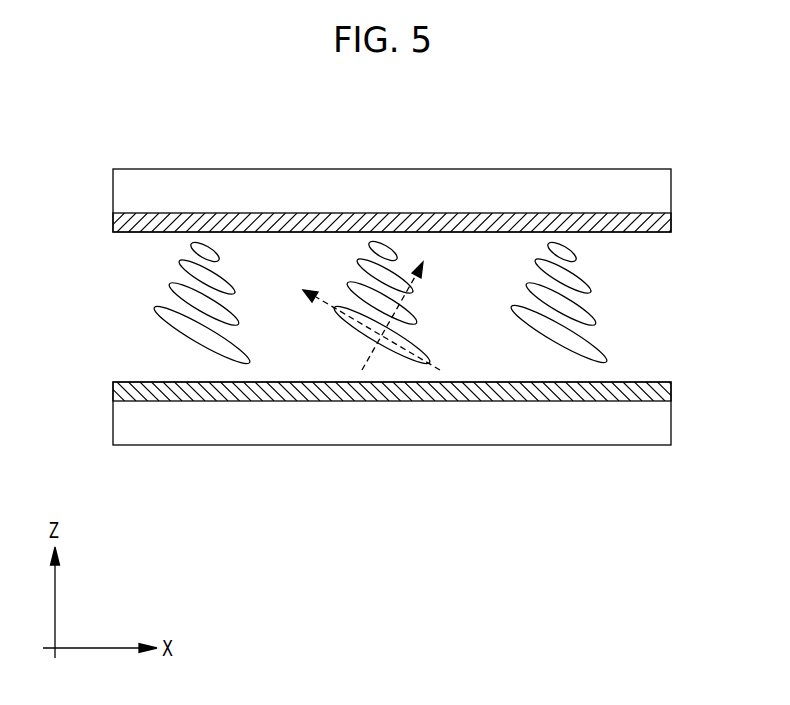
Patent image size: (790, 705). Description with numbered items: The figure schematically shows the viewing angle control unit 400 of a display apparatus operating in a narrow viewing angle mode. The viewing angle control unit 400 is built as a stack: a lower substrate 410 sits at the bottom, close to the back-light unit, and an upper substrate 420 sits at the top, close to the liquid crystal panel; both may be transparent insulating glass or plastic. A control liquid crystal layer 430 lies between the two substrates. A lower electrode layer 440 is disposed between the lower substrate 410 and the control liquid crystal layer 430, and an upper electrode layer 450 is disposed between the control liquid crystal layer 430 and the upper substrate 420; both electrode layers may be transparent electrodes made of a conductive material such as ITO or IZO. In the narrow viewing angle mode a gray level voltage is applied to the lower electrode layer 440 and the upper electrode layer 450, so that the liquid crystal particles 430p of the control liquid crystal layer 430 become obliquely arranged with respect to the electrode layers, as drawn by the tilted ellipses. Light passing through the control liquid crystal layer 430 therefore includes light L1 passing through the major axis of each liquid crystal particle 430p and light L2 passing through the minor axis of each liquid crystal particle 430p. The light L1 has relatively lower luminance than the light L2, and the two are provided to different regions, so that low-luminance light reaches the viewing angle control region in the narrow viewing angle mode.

The viewing angle control unit 400 is at (400, 112).
The lower substrate 410 is at (662, 422).
The upper substrate 420 is at (662, 193).
The control liquid crystal layer 430 is at (385, 308).
The liquid crystal particle 430p is at (616, 351).
The lower electrode layer 440 is at (665, 390).
The upper electrode layer 450 is at (665, 221).
The light passing through major axis L1 is at (438, 373).
The light passing through minor axis L2 is at (366, 362).